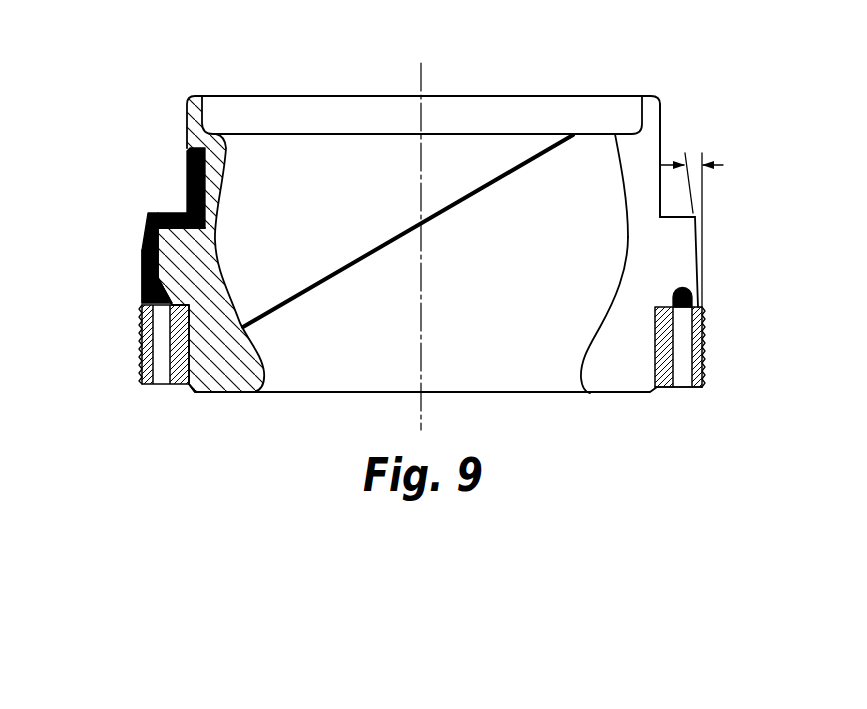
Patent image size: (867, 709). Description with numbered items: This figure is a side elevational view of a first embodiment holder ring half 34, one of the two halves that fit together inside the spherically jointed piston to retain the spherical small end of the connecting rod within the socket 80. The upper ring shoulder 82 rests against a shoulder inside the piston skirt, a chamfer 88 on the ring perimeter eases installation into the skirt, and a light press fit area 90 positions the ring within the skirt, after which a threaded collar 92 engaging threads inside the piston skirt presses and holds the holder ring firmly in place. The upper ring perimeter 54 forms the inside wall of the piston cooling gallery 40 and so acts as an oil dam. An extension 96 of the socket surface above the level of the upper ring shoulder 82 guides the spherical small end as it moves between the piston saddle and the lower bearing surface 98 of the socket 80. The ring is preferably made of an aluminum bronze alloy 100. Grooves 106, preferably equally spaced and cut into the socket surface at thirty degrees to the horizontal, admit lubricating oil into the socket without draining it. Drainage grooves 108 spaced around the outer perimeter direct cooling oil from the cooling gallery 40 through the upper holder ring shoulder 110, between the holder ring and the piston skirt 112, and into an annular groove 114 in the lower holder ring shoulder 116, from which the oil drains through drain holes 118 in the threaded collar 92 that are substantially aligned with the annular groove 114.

The holder ring half 34 is at (376, 78).
The piston cooling gallery 40 is at (186, 150).
The upper ring perimeter 54 is at (661, 165).
The socket 80 is at (386, 190).
The upper ring shoulder 82 is at (672, 218).
The chamfer 88 is at (702, 172).
The light press fit area 90 is at (698, 263).
The threaded collar 92 is at (141, 357).
The extension of the socket surface 96 is at (618, 170).
The lower bearing surface 98 is at (600, 327).
The aluminum bronze alloy 100 is at (232, 392).
The grooves 106 is at (345, 268).
The drainage grooves 108 is at (104, 204).
The upper holder ring shoulder 110 is at (158, 213).
The space between holder ring and piston skirt 112 is at (142, 247).
The annular groove 114 is at (693, 300).
The lower holder ring shoulder 116 is at (165, 298).
The drain holes 118 is at (678, 375).